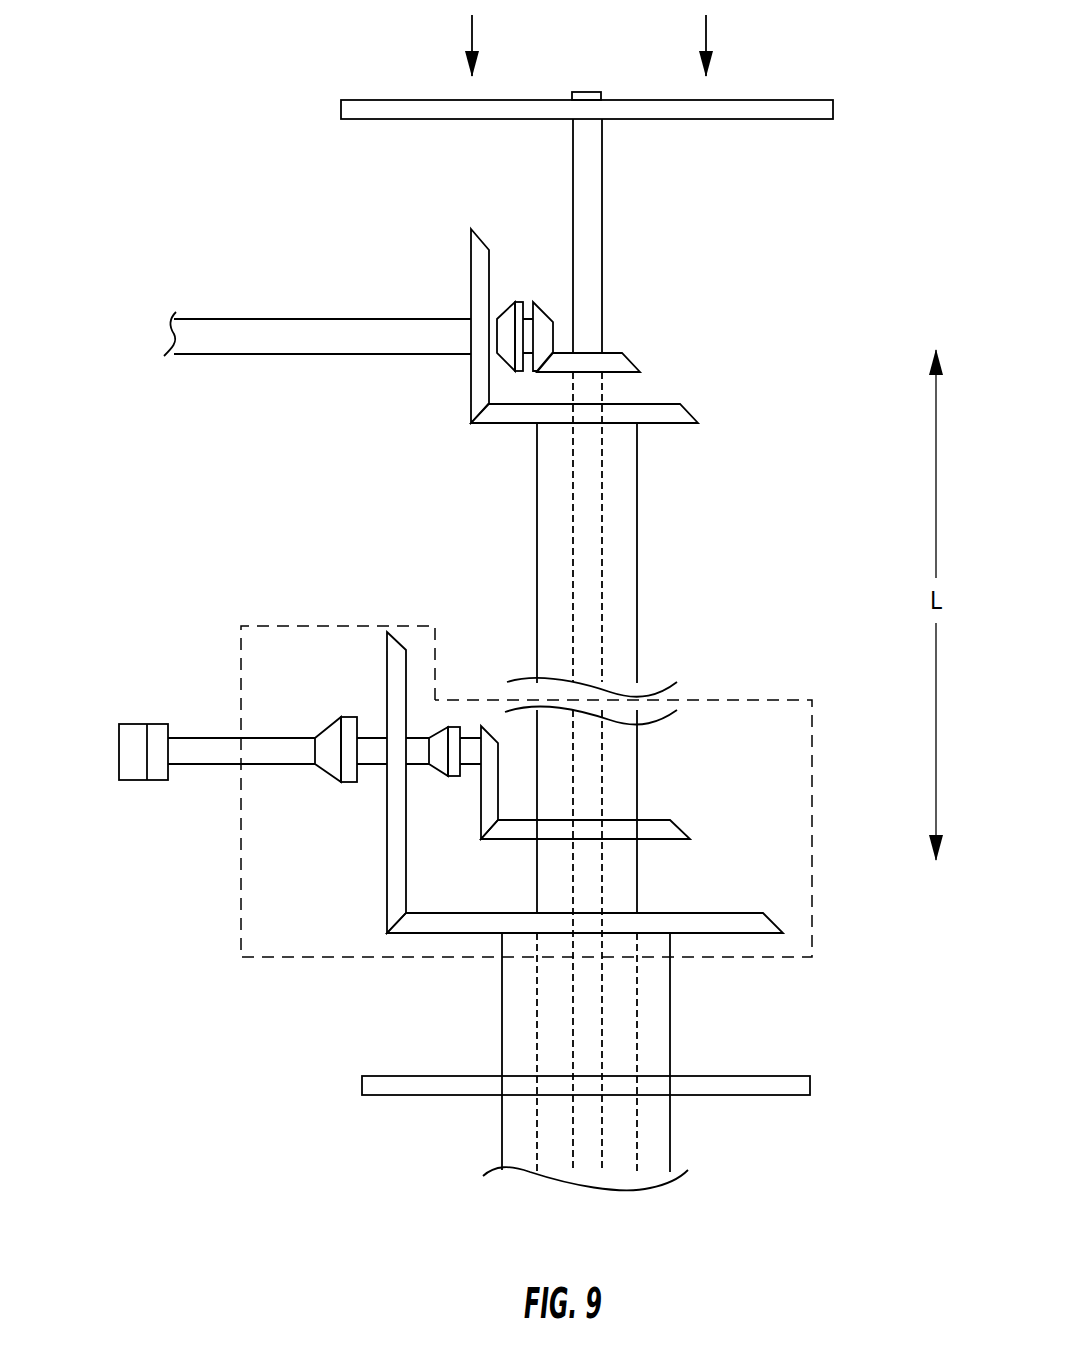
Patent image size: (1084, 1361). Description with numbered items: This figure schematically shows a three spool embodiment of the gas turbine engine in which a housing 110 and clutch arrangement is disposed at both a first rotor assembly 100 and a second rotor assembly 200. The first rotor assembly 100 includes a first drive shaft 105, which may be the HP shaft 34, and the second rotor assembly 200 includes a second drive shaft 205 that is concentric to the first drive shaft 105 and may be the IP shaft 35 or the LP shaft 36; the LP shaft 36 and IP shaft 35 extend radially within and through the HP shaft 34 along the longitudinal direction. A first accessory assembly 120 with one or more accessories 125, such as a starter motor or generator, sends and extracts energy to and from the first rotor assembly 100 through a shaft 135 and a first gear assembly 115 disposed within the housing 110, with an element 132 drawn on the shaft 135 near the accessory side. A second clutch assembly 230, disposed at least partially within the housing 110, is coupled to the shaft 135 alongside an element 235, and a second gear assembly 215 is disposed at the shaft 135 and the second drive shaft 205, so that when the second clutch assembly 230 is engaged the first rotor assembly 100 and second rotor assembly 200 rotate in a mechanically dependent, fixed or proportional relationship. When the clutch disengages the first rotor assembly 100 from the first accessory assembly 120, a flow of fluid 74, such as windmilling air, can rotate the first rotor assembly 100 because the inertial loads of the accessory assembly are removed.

The flow of fluid 74 is at (468, 36).
The second drive shaft 205 is at (587, 92).
The second rotor assembly 200 is at (788, 75).
The LP shaft 36 is at (603, 250).
The second clutch assembly 230 is at (503, 318).
The shaft 135 is at (318, 328).
The second gear assembly 215 is at (537, 373).
The first gear assembly 115 is at (470, 424).
The first rotor assembly 100 is at (667, 445).
The first drive shaft 105 is at (537, 505).
The IP shaft 35 is at (637, 556).
The collar 235 is at (453, 733).
The accessories 125 is at (160, 728).
The first accessory assembly 120 is at (133, 772).
The flange 132 is at (353, 783).
The housing 110 is at (812, 802).
The HP shaft 34 is at (670, 1015).